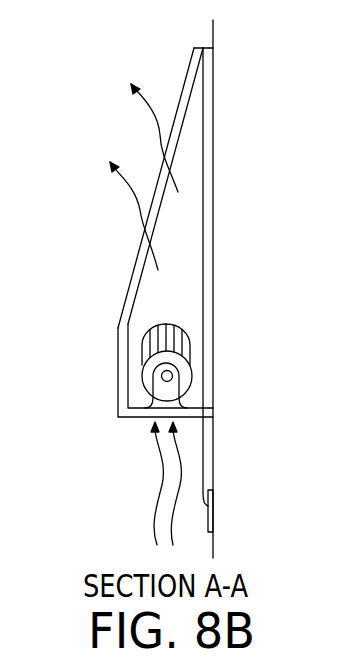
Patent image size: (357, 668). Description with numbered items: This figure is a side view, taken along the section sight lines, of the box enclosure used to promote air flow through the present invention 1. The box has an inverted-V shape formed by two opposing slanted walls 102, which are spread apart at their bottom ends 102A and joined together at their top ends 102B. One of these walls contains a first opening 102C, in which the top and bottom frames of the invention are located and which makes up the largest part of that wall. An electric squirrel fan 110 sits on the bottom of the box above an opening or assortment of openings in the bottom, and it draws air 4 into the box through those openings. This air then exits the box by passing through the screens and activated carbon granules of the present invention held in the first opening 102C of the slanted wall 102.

The lighting device 1 is at (186, 289).
The air flow 4 is at (160, 527).
The slanted wall 102 is at (215, 148).
The bottom end 102A is at (180, 382).
The top end 102B is at (208, 48).
The first opening 102C is at (125, 328).
The electric squirrel fan 110 is at (146, 378).